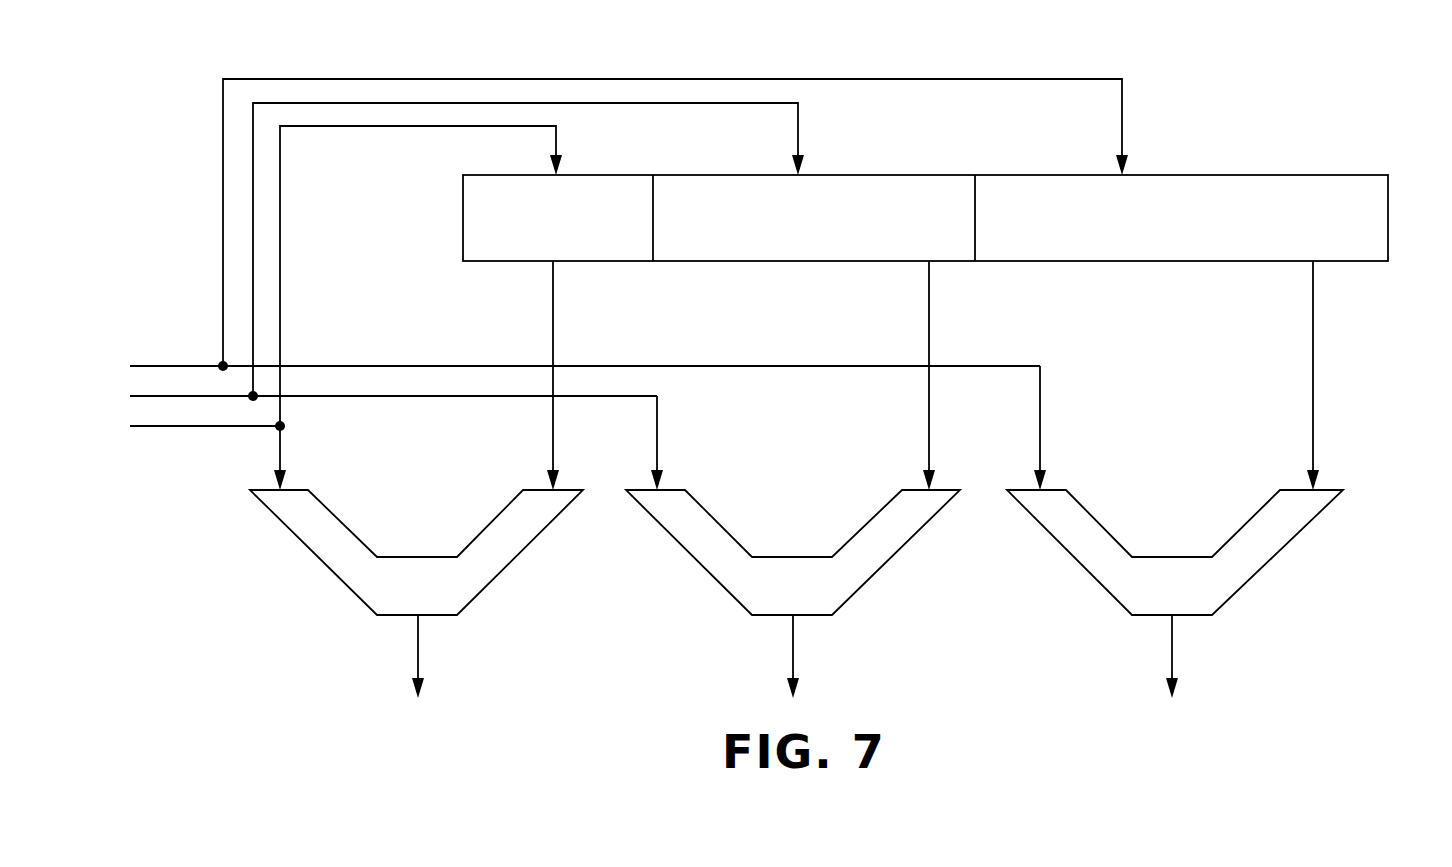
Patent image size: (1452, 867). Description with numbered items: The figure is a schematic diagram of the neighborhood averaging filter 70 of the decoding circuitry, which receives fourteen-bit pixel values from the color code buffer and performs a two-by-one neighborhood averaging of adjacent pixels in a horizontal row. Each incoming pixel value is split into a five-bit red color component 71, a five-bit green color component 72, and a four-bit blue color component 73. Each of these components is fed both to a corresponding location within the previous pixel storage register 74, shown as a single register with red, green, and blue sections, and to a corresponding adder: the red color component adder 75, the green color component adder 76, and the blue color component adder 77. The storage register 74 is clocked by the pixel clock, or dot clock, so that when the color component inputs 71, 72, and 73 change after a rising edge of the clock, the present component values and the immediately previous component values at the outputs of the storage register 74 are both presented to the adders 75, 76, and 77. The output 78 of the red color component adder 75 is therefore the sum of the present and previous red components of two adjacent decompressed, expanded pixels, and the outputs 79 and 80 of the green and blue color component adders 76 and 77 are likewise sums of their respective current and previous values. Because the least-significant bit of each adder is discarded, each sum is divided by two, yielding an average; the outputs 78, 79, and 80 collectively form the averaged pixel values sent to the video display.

The neighborhood averaging filter 70 is at (1266, 115).
The red color component 71 is at (165, 366).
The green color component 72 is at (165, 396).
The blue color component 73 is at (162, 427).
The previous pixel storage register 74 is at (1353, 175).
The red color component adder 75 is at (328, 568).
The green color component adder 76 is at (702, 568).
The blue color component adder 77 is at (1082, 568).
The output of red color component adder 78 is at (418, 658).
The output of green color component adder 79 is at (793, 658).
The output of blue color component adder 80 is at (1172, 658).